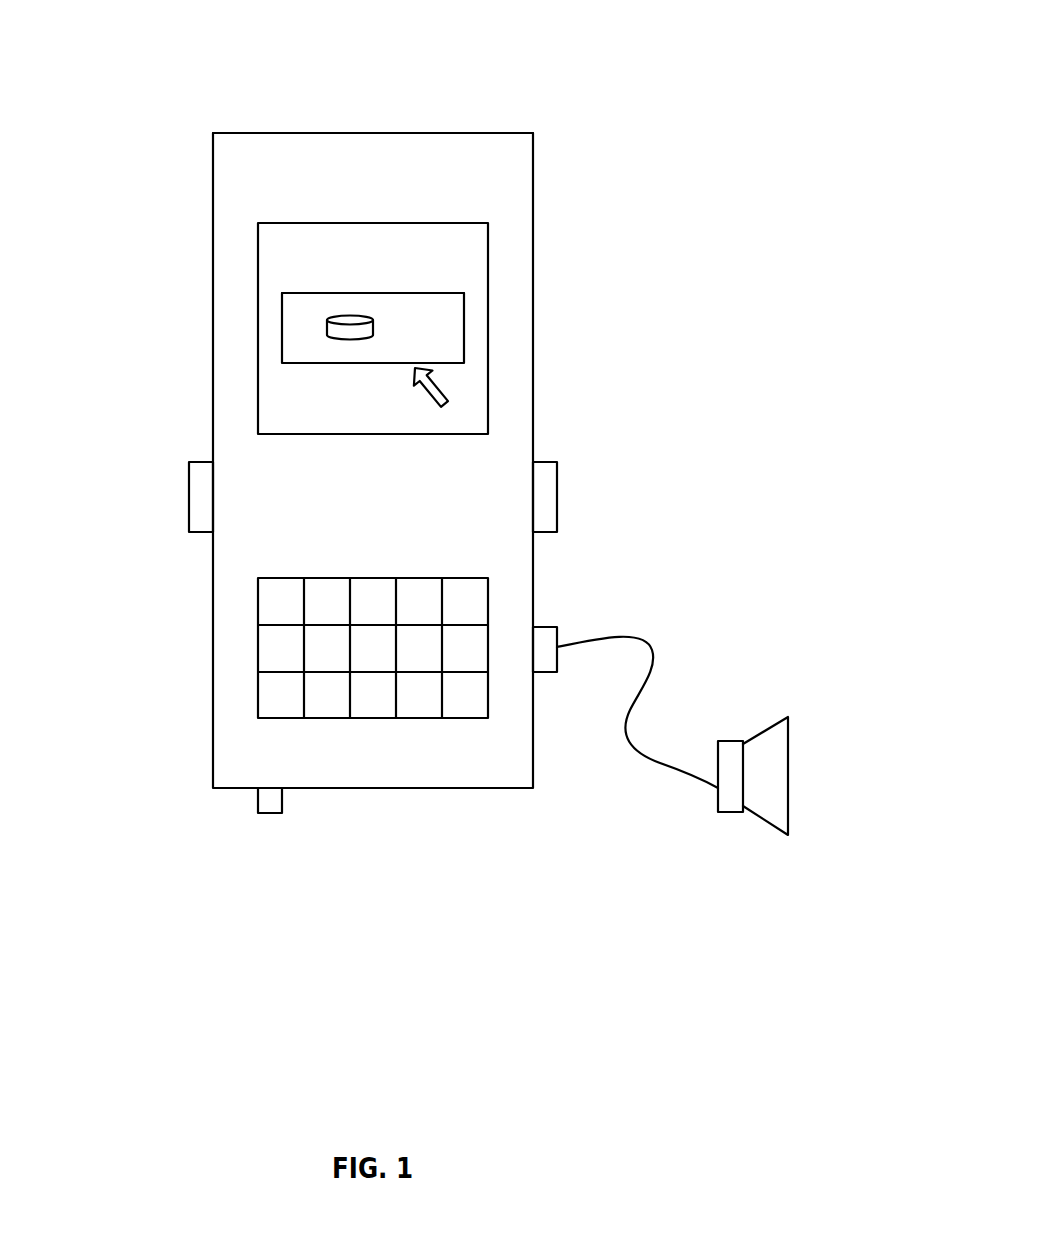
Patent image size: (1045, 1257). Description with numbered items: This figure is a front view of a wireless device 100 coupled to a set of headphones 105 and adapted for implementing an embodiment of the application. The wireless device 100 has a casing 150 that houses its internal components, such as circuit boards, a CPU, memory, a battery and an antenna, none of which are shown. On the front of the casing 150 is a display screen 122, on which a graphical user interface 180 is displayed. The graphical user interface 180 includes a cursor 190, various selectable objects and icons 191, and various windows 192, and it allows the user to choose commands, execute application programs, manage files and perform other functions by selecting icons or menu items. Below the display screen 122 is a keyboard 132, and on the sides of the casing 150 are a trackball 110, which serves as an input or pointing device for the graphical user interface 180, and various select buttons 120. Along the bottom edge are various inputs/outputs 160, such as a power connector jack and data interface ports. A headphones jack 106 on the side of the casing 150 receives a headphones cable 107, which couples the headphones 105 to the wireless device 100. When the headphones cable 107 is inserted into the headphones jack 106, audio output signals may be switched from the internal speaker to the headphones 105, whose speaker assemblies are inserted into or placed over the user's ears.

The wireless device 100 is at (328, 110).
The casing 150 is at (529, 167).
The graphical user interface 180 is at (305, 275).
The display screen 122 is at (442, 269).
The selectable objects and icons 191 is at (305, 320).
The windows 192 is at (442, 317).
The cursor 190 is at (442, 386).
The select buttons 120 is at (186, 508).
The trackball 110 is at (558, 510).
The headphones jack 106 is at (558, 622).
The keyboard 132 is at (282, 648).
The inputs/outputs 160 is at (258, 835).
The headphones cable 107 is at (647, 680).
The headphones 105 is at (808, 753).